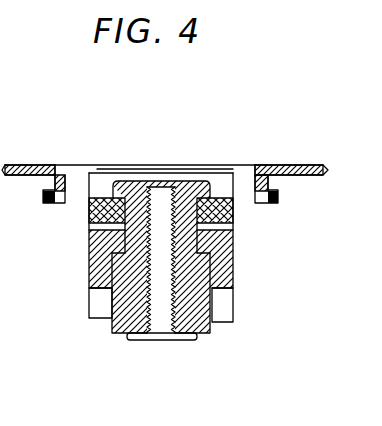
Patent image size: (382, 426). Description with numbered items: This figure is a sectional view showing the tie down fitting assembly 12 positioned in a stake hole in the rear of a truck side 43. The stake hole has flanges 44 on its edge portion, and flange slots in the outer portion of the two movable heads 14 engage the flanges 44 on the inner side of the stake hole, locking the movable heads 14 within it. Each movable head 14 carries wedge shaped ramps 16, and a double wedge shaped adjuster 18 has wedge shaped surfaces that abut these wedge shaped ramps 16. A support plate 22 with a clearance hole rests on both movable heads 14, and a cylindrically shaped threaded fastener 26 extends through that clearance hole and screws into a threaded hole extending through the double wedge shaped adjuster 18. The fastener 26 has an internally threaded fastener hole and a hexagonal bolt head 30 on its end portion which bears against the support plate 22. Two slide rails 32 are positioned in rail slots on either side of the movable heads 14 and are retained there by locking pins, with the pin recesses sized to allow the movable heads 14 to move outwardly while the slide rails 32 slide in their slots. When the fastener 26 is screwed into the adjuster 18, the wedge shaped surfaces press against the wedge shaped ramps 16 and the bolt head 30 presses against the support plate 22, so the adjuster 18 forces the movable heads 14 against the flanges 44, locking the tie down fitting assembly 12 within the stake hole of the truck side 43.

The tie down fitting assembly 12 is at (257, 397).
The movable heads 14 is at (110, 168).
The wedge shaped ramps 16 is at (233, 305).
The double wedge shaped adjuster 18 is at (110, 318).
The support plate 22 is at (233, 213).
The threaded fastener 26 is at (137, 342).
The hexagonal bolt head 30 is at (218, 172).
The slide rails 32 is at (89, 280).
The truck side 43 is at (60, 165).
The flanges 44 is at (60, 190).